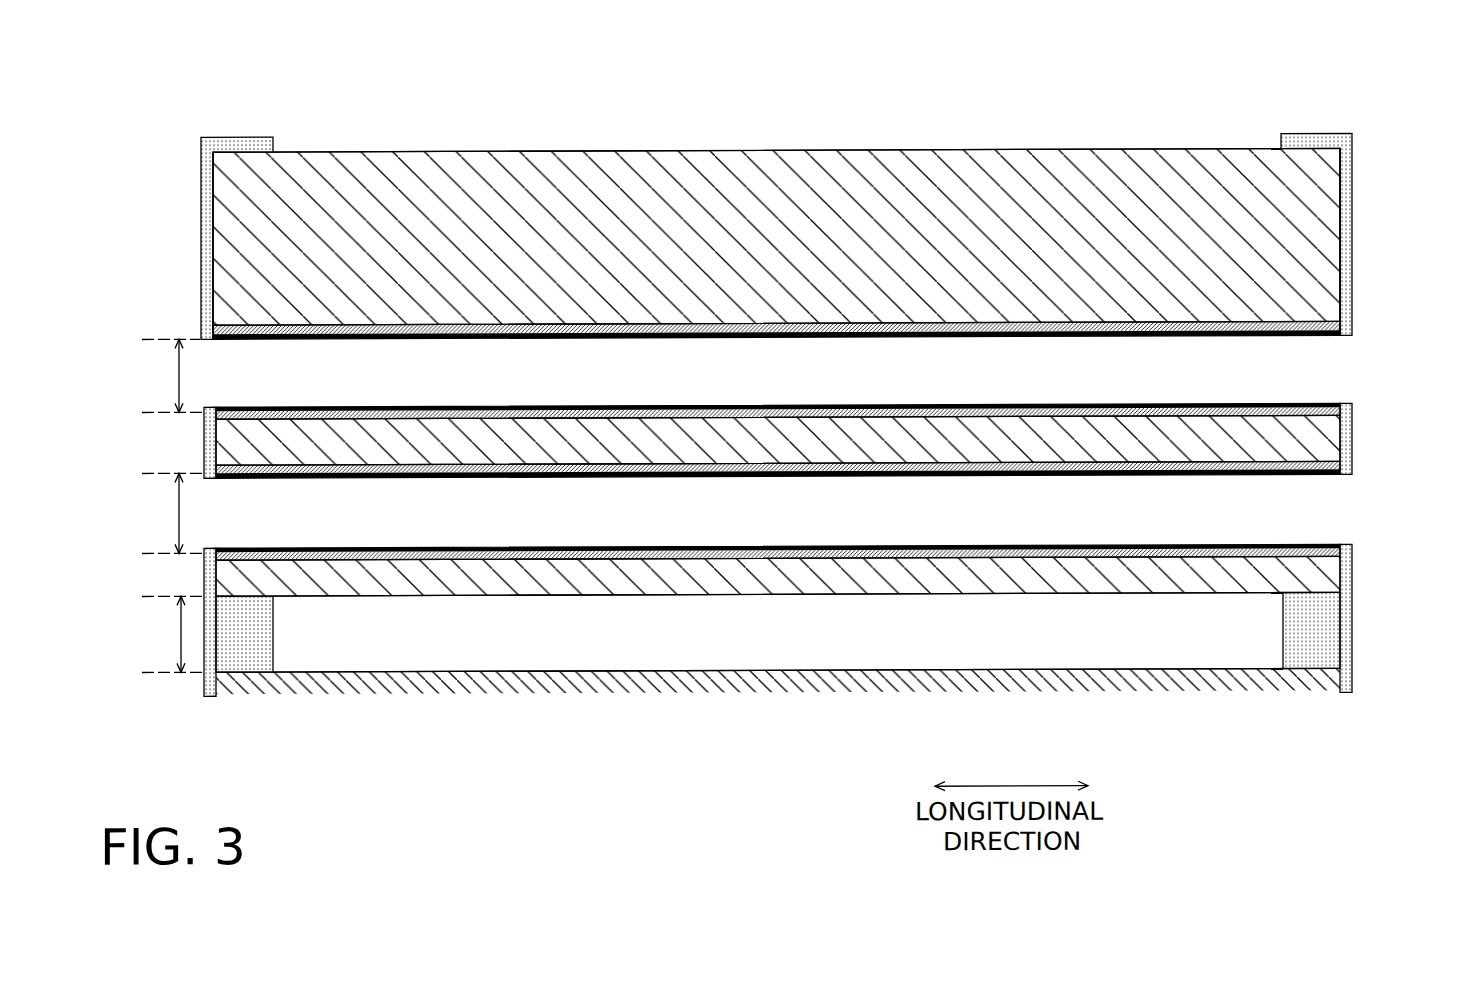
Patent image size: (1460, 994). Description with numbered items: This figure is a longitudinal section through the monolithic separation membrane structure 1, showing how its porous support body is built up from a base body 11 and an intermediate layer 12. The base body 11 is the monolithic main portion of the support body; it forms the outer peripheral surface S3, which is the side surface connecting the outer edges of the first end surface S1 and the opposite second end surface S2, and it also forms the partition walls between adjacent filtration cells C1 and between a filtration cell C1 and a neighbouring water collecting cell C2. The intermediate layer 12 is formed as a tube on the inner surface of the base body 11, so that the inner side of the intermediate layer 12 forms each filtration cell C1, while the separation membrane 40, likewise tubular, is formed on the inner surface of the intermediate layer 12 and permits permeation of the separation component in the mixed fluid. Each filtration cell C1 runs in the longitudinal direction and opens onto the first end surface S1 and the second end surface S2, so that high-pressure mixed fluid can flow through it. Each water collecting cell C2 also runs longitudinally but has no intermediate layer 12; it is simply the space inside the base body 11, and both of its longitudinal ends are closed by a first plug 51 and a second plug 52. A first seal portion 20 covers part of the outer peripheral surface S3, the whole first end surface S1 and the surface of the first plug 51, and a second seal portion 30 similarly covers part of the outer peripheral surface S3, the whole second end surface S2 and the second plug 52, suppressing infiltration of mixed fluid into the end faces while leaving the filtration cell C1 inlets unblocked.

The monolithic separation membrane structure 1 is at (1358, 113).
The base body 11 is at (1337, 287).
The intermediate layer 12 is at (1345, 333).
The first seal portion 20 is at (201, 158).
The second seal portion 30 is at (1352, 156).
The separation membrane 40 is at (1328, 340).
The first plug 51 is at (257, 656).
The second plug 52 is at (1340, 631).
The first end surface S1 is at (206, 251).
The second end surface S2 is at (1345, 237).
The outer peripheral surface S3 is at (411, 150).
The filtration cell C1 is at (160, 446).
The water collecting cell C2 is at (160, 634).